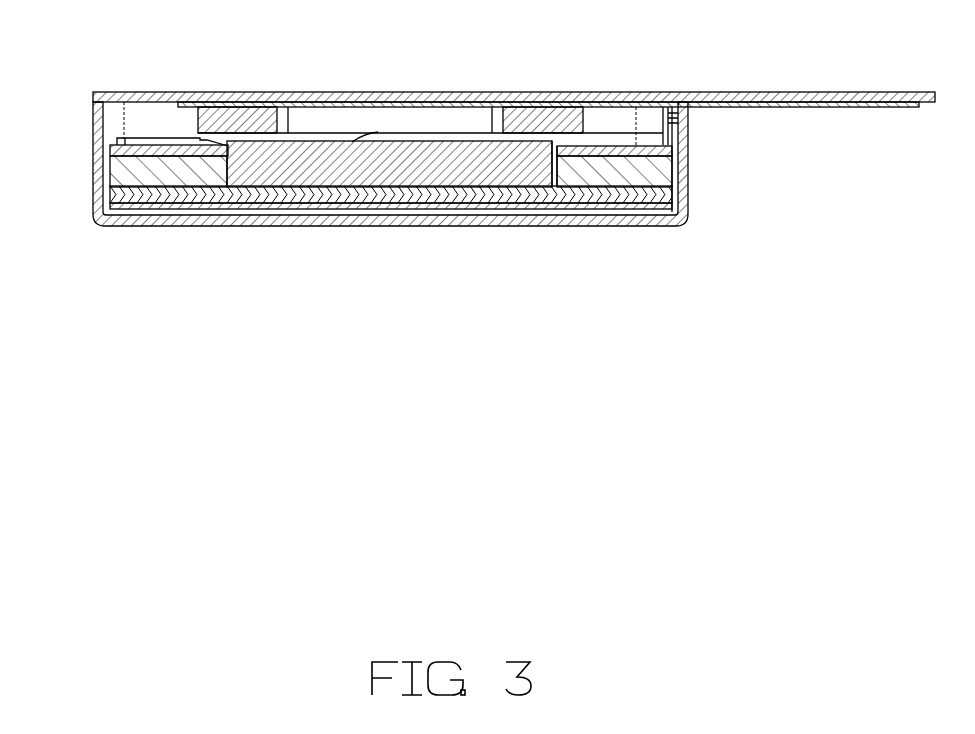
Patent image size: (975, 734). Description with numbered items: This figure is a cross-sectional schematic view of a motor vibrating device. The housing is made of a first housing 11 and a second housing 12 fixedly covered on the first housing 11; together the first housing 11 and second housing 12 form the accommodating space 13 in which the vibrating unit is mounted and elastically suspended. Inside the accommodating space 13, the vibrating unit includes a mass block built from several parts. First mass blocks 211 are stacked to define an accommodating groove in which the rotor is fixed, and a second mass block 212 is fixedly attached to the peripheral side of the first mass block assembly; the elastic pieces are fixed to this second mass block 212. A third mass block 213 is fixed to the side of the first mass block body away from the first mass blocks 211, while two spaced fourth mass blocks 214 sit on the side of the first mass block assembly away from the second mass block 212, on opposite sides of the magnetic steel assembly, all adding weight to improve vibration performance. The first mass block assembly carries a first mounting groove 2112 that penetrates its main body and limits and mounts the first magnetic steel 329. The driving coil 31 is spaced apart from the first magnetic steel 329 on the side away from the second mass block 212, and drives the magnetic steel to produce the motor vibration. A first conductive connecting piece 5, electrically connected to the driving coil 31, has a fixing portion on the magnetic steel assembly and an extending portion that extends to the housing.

The first housing 11 is at (97, 178).
The second housing 12 is at (100, 93).
The accommodating space 13 is at (172, 113).
The first conductive connecting piece 5 is at (512, 105).
The driving coil 31 is at (545, 120).
The first magnetic steel 329 is at (293, 175).
The first mounting groove 2112 is at (553, 182).
The first mass block 211 is at (617, 173).
The second mass block 212 is at (483, 190).
The third mass block 213 is at (375, 209).
The fourth mass block 214 is at (668, 190).